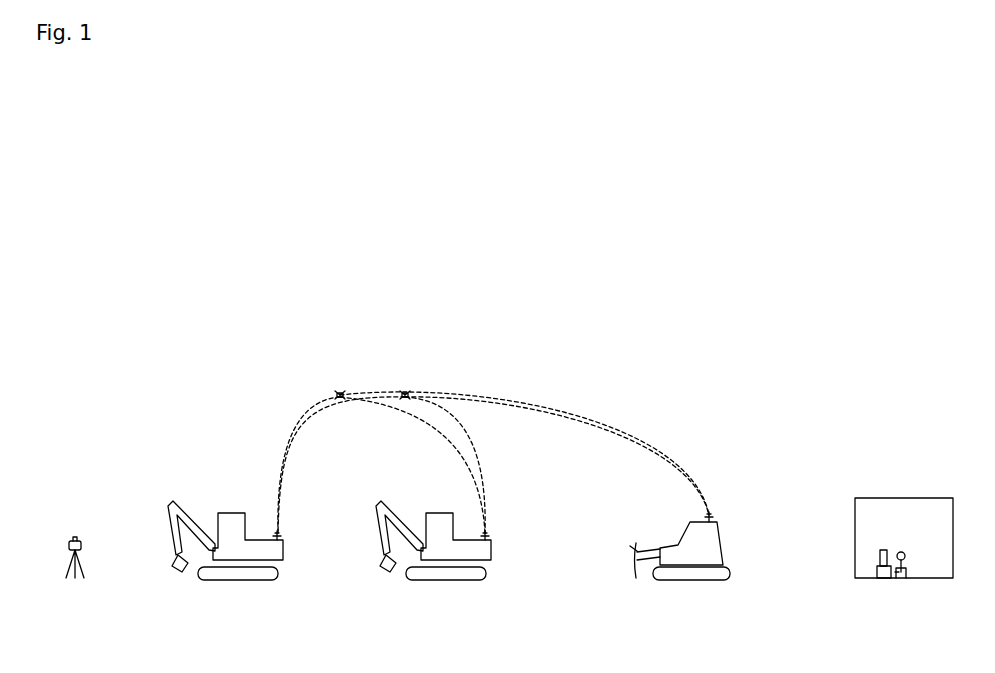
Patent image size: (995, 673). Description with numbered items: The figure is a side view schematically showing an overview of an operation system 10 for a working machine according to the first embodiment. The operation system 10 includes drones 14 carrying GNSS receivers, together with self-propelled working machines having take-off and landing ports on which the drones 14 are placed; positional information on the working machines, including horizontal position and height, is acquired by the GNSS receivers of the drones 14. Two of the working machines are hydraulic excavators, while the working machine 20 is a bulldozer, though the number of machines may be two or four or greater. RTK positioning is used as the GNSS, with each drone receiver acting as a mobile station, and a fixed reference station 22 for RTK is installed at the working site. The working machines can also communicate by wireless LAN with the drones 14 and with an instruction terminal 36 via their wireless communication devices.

The operation system 10 is at (488, 196).
The drones 14 is at (340, 388).
The working machine 20 is at (673, 518).
The fixed reference station 22 is at (72, 539).
The instruction terminal 36 is at (887, 548).